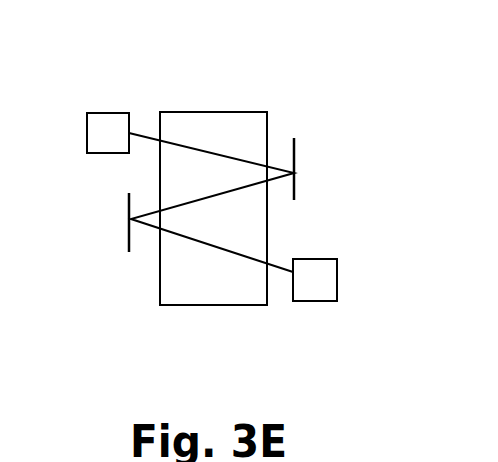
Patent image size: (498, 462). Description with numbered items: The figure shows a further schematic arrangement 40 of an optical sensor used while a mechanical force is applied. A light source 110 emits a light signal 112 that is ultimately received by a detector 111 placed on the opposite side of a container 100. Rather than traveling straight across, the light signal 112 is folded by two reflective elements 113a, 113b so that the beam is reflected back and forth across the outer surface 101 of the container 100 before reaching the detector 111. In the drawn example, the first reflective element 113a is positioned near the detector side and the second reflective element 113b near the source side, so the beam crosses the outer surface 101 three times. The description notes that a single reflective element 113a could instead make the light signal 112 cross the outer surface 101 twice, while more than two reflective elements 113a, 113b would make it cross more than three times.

The schematic arrangement of an optical sensor 40 is at (190, 98).
The container 100 is at (185, 306).
The outer surface 101 is at (254, 135).
The light source 110 is at (108, 156).
The detector 111 is at (330, 311).
The light signal 112 is at (214, 149).
The first reflective element 113a is at (298, 172).
The second reflective element 113b is at (127, 220).